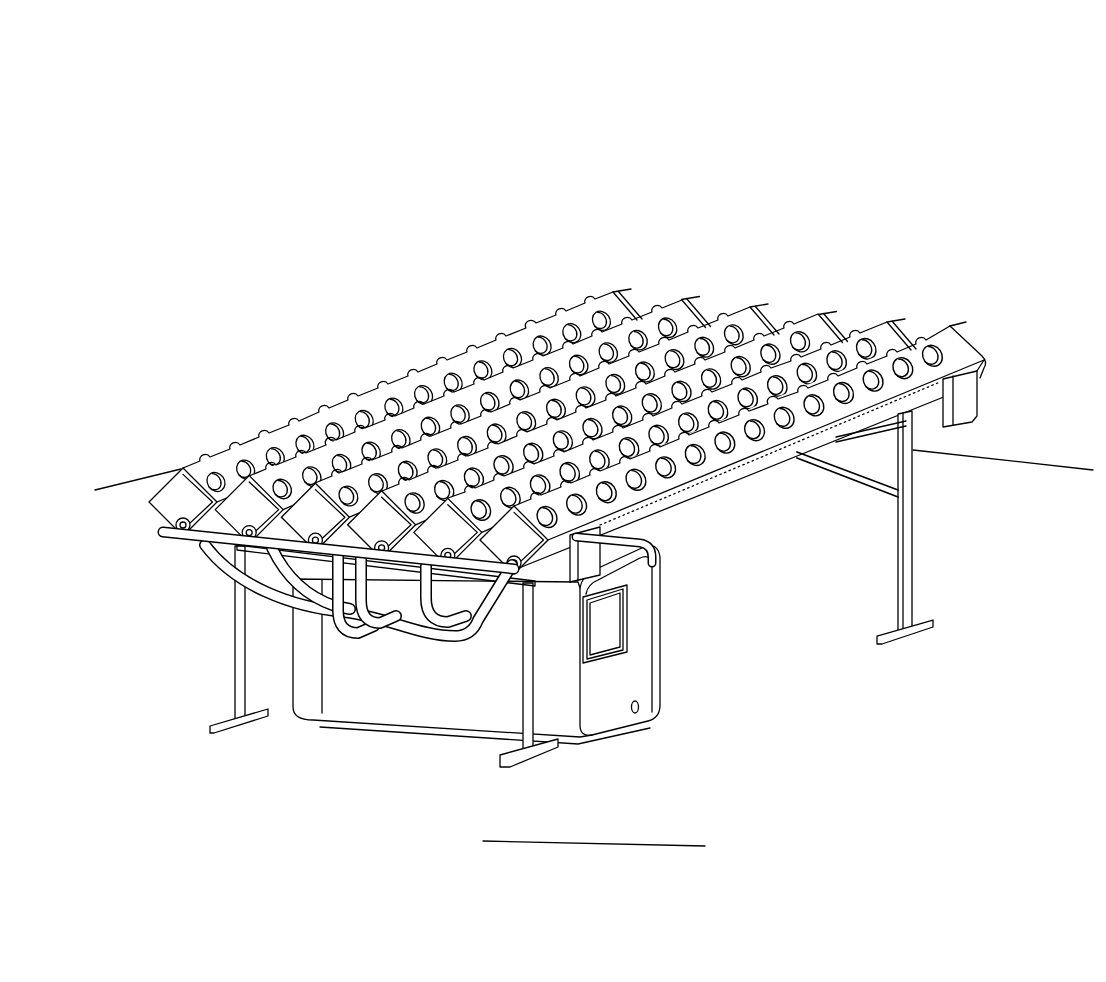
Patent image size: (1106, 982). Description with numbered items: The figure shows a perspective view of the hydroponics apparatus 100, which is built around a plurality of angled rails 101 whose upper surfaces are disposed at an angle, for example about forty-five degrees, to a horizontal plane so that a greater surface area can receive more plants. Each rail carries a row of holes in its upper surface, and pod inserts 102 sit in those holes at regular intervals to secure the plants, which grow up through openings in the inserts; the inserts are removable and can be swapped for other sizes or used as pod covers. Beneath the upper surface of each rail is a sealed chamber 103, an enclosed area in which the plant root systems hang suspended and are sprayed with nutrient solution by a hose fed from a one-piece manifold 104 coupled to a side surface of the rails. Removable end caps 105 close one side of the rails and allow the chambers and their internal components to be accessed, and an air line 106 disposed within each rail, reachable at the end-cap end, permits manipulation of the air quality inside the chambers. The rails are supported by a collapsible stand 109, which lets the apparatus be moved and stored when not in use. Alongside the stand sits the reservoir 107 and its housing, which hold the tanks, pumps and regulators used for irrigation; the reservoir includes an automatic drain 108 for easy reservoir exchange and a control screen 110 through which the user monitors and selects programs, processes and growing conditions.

The hydroponics apparatus 100 is at (240, 185).
The angled rail 101 is at (595, 299).
The pod insert 102 is at (452, 375).
The sealed chamber 103 is at (176, 506).
The manifold 104 is at (194, 545).
The removable end cap 105 is at (762, 320).
The air line 106 is at (962, 318).
The reservoir 107 is at (643, 657).
The automatic drain 108 is at (642, 710).
The collapsible stand 109 is at (907, 540).
The control screen 110 is at (617, 610).